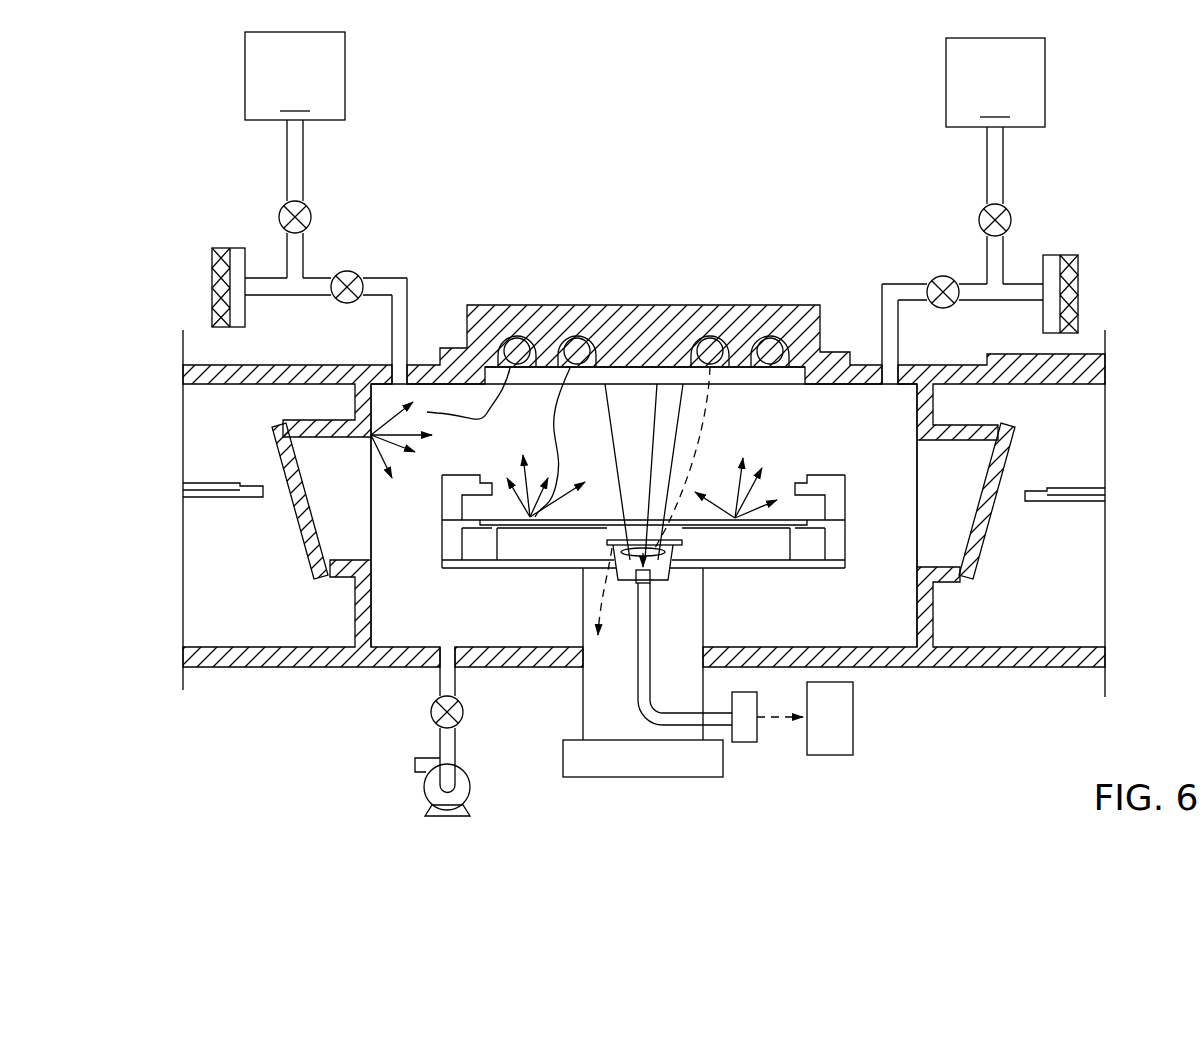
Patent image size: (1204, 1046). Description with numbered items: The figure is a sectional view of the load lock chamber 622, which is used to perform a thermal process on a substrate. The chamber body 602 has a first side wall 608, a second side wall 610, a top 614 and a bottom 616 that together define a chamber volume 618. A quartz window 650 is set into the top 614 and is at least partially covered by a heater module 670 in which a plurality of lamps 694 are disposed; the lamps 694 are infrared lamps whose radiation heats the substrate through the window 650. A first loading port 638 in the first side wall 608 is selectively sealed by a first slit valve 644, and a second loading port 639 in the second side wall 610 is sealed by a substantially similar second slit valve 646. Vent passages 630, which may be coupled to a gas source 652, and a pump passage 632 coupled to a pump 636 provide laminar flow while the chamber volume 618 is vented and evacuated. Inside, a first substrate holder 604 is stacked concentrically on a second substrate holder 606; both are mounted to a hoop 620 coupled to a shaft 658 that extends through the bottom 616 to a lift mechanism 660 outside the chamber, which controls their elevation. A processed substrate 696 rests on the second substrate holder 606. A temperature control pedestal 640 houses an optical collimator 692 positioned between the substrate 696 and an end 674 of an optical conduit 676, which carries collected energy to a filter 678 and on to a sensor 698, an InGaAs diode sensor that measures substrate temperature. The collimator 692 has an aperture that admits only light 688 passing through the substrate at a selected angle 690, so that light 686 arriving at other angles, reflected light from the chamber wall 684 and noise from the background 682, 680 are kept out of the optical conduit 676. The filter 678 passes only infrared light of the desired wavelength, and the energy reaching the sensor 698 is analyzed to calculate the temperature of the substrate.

The chamber body 602 is at (209, 416).
The first substrate holder 604 is at (846, 493).
The second substrate holder 606 is at (846, 540).
The first side wall 608 is at (378, 396).
The second side wall 610 is at (930, 405).
The top 614 is at (250, 483).
The bottom 616 is at (497, 647).
The chamber volume 618 is at (505, 422).
The hoop 620 is at (812, 568).
The first side chamber 622 is at (367, 345).
The vent passage 630 is at (386, 290).
The pump passage 632 is at (447, 655).
The pump 636 is at (470, 790).
The first loading port 638 is at (348, 535).
The second loading port 639 is at (940, 485).
The temperature control pedestal 640 is at (770, 550).
The first slit valve 644 is at (303, 547).
The second slit valve 646 is at (980, 535).
The window 650 is at (797, 378).
The gas source 652 is at (645, 79).
The shaft 658 is at (593, 687).
The lift mechanism 660 is at (600, 777).
The heater module 670 is at (773, 296).
The end 674 is at (651, 584).
The optical conduit 676 is at (693, 727).
The filter 678 is at (745, 745).
The background 680 is at (740, 485).
The background 682 is at (563, 506).
The chamber wall 684 is at (418, 438).
The light 686 is at (710, 403).
The light 688 is at (656, 397).
The angle 690 is at (602, 423).
The optical collimator 692 is at (678, 553).
The lamps 694 is at (515, 336).
The substrate 696 is at (783, 388).
The sensor 698 is at (832, 748).